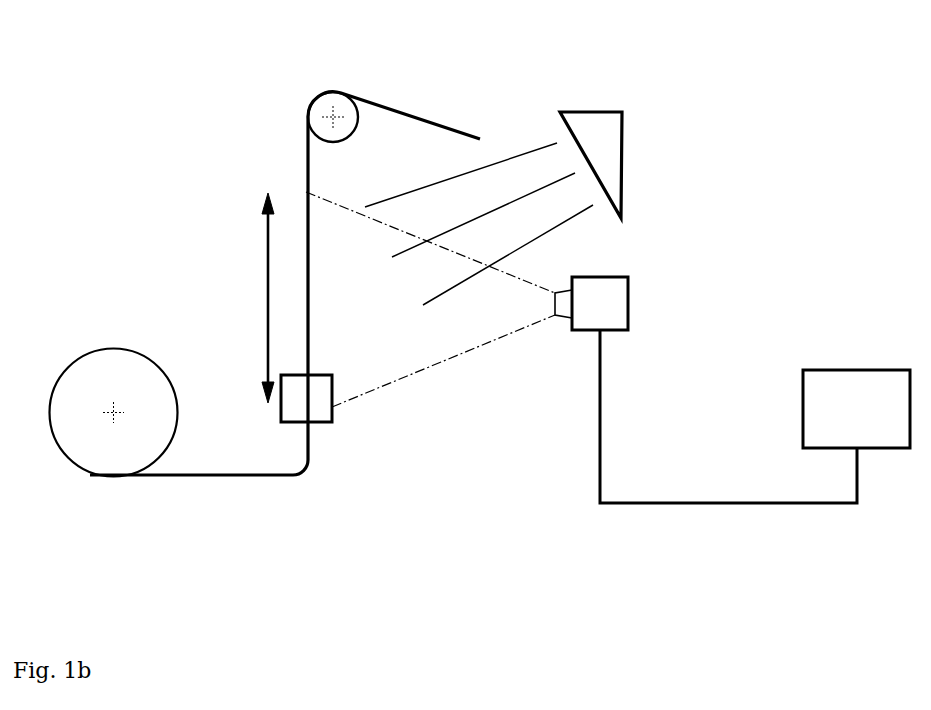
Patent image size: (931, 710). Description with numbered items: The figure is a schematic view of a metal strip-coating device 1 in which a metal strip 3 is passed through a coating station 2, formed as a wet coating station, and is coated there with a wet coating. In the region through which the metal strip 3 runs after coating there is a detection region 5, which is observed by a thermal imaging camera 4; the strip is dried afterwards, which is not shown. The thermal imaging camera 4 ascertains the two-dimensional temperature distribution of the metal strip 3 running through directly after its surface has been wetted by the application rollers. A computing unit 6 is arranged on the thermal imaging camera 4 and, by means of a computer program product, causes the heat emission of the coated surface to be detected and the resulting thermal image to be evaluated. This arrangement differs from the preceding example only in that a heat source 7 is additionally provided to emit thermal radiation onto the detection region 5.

The metal strip-coating device 1 is at (213, 94).
The coating station 2 is at (318, 413).
The metal strip 3 is at (427, 121).
The thermal imaging camera 4 is at (606, 318).
The detection region 5 is at (263, 297).
The computing unit 6 is at (864, 418).
The heat source 7 is at (493, 208).